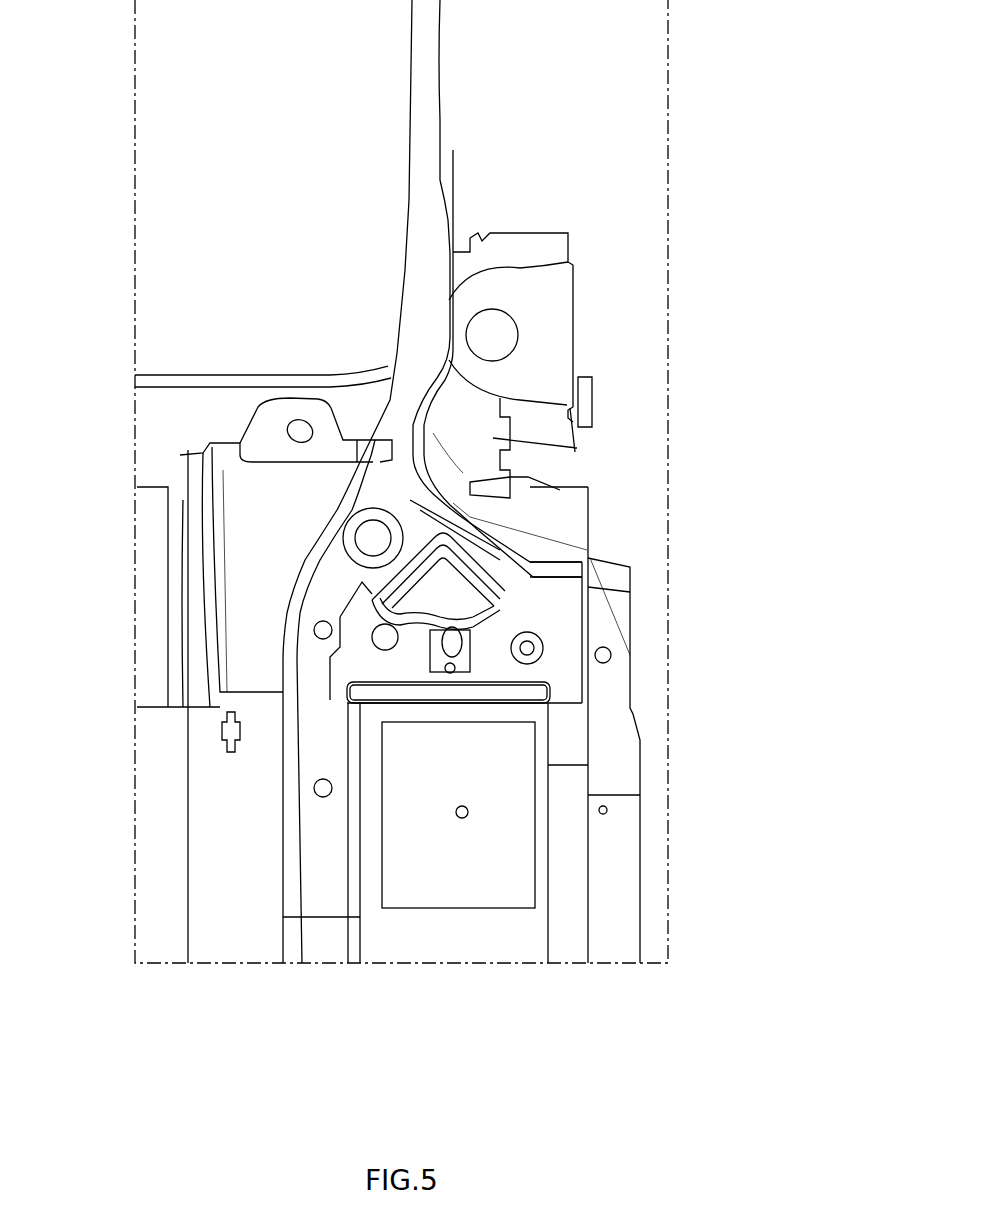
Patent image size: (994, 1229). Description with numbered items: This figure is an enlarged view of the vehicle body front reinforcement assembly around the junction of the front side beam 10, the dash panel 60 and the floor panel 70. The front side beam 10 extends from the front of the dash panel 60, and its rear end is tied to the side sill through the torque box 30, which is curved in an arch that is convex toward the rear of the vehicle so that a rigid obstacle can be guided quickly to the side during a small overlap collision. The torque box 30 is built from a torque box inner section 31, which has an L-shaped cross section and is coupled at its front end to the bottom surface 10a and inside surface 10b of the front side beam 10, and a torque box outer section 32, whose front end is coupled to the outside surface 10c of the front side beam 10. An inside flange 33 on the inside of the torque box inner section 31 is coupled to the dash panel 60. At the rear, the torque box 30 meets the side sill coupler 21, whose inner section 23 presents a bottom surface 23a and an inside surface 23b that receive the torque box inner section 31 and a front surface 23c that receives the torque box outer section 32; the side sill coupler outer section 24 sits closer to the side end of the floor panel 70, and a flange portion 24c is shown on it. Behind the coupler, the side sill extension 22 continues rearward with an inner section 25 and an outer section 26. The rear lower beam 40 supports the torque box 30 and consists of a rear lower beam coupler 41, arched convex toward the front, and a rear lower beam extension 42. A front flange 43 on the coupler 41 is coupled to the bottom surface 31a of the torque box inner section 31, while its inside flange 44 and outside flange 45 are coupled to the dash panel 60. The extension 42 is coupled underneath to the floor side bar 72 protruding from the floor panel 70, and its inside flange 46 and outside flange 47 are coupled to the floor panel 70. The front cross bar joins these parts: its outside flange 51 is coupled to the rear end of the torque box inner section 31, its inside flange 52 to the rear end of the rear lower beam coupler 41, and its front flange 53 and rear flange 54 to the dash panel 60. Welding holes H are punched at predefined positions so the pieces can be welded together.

The front side beam 10 is at (395, 103).
The bottom surface 10a is at (412, 397).
The inside surface 10b is at (367, 405).
The outside surface 10c is at (447, 423).
The dash panel 60 is at (160, 418).
The front flange 43 is at (376, 490).
The bottom surface 31a is at (412, 482).
The rear lower beam 40 is at (277, 618).
The rear lower beam coupler 41 is at (343, 577).
The rear lower beam extension 42 is at (323, 738).
The inside flange 44 is at (343, 527).
The inside flange 46 is at (288, 830).
The outside flange 51 is at (340, 660).
The welding holes H is at (314, 788).
The outside flange 45 is at (413, 590).
The front flange 53 is at (432, 617).
The inside flange 33 is at (476, 595).
The rear flange 54 is at (497, 695).
The outside flange 47 is at (358, 838).
The torque box 30 is at (505, 523).
The torque box inner section 31 is at (560, 566).
The torque box outer section 32 is at (485, 560).
The inside flange 52 is at (586, 643).
The side sill coupler inner section 23 is at (570, 753).
The bottom surface 23a is at (592, 733).
The inside surface 23b is at (540, 745).
The front surface 23c is at (587, 552).
The side sill coupler outer section 24 is at (612, 683).
The reinforcement panel flange 24c is at (620, 607).
The side sill coupler 21 is at (647, 702).
The side sill extension 22 is at (650, 812).
The side sill extension inner section 25 is at (570, 923).
The side sill extension outer section 26 is at (623, 863).
The floor side bar 72 is at (325, 945).
The floor panel 70 is at (450, 945).